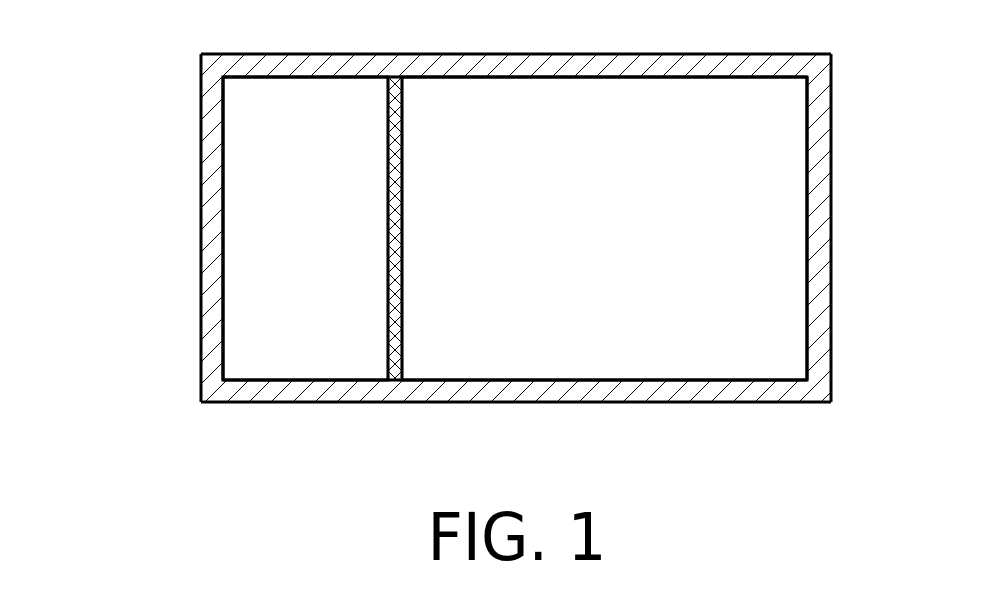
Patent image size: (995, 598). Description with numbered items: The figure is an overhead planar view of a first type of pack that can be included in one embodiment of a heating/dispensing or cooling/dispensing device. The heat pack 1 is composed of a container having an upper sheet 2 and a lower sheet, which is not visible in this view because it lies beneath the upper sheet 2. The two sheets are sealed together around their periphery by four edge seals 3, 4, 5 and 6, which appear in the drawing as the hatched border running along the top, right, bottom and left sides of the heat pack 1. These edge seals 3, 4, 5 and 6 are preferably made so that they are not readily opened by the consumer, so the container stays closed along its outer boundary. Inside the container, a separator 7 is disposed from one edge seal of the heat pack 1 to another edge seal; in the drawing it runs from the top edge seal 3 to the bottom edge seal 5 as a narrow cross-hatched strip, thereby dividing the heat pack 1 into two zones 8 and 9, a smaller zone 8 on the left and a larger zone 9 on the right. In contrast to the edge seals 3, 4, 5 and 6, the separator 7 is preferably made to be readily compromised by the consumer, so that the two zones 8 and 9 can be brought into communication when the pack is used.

The heat pack 1 is at (132, 199).
The upper sheet 2 is at (498, 62).
The edge seal 3 is at (298, 65).
The edge seal 4 is at (818, 180).
The edge seal 5 is at (486, 387).
The edge seal 6 is at (210, 338).
The separator 7 is at (392, 283).
The zone 8 is at (272, 350).
The zone 9 is at (619, 330).